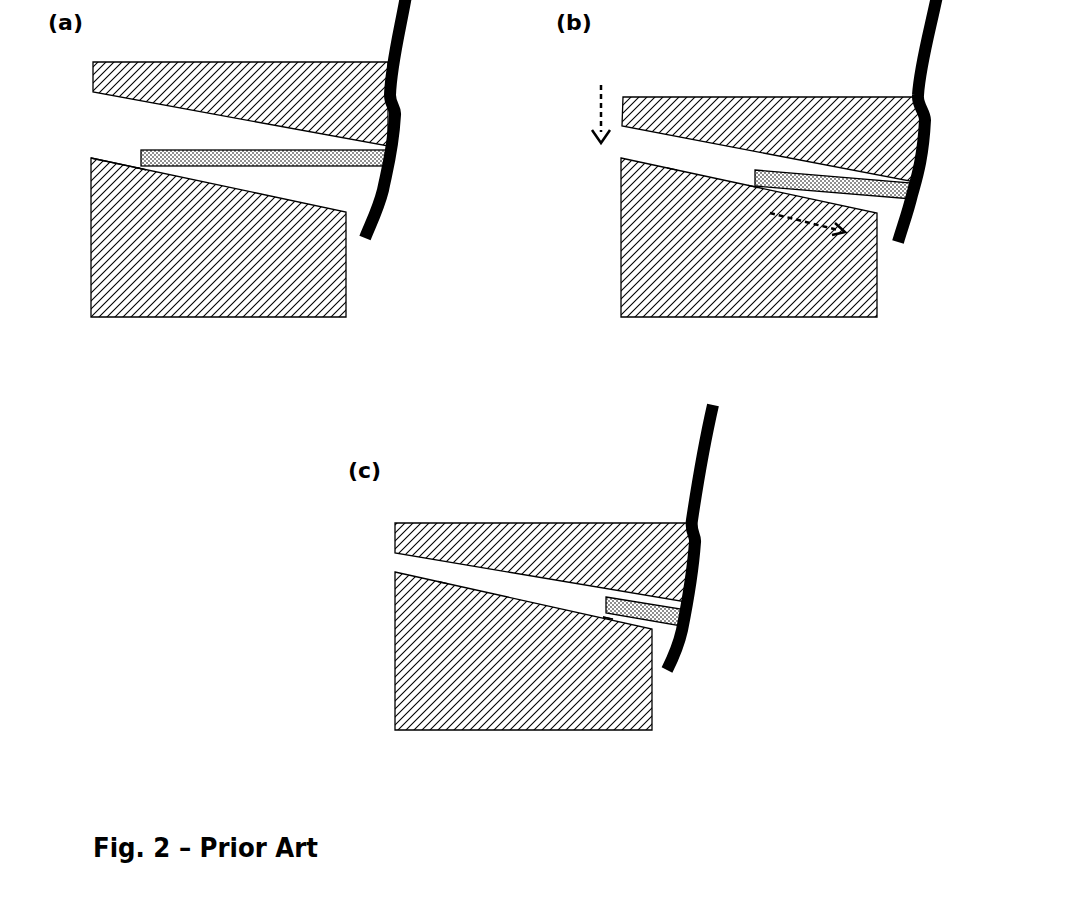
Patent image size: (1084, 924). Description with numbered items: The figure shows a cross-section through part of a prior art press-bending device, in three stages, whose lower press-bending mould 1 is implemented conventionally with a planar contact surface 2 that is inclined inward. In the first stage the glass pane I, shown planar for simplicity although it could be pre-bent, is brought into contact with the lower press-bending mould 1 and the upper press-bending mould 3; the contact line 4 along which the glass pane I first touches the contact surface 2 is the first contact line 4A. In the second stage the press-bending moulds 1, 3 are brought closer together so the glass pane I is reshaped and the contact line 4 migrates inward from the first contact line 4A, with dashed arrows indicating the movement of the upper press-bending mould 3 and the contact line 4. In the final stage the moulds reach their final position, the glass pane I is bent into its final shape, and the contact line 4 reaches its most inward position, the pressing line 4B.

The lower press-bending mould 1 is at (336, 272).
The contact surface 2 is at (112, 156).
The upper press-bending mould 3 is at (356, 71).
The glass pane I is at (160, 150).
The contact line 4 is at (141, 177).
The first contact line 4A is at (672, 178).
The pressing line 4B is at (608, 627).